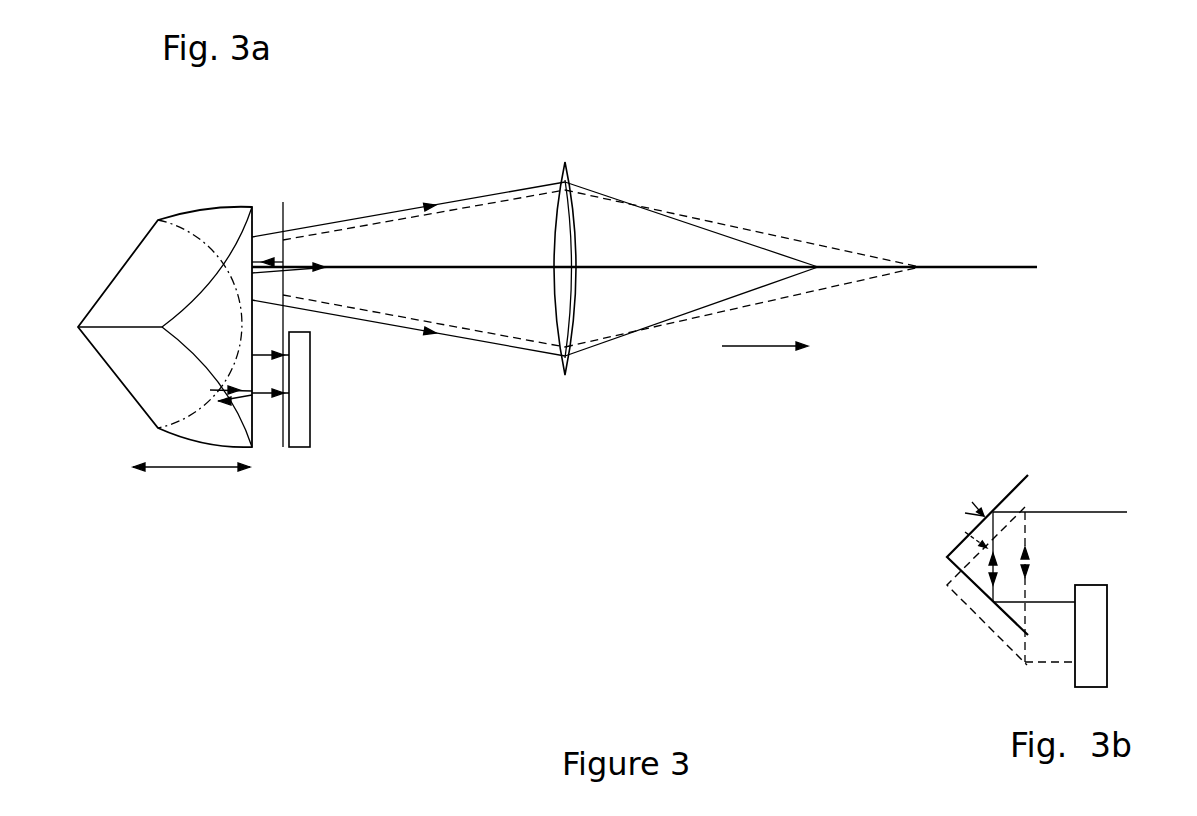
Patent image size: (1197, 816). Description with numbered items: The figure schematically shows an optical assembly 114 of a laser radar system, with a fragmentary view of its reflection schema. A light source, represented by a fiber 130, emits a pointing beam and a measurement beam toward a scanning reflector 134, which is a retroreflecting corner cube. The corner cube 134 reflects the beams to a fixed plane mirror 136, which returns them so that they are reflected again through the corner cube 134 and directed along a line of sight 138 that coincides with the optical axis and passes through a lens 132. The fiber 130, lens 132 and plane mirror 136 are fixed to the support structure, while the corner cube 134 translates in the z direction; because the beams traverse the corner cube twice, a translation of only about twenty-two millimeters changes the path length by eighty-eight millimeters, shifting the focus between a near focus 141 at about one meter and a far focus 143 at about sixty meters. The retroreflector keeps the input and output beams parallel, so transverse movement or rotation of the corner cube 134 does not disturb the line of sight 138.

In FIG. 3A, the optical assembly 114 is at (826, 122).
In FIG. 3A, the fiber 130 is at (345, 268).
In FIG. 3A, the lens 132 is at (566, 160).
In FIG. 3A, the scanning reflector (corner cube) 134 is at (205, 220).
In FIG. 3B, the scanning reflector (corner cube) 134 is at (1005, 497).
In FIG. 3A, the plane mirror 136 is at (290, 428).
In FIG. 3B, the plane mirror 136 is at (1108, 618).
In FIG. 3A, the line of sight 138 is at (672, 265).
In FIG. 3A, the near focus 141 is at (820, 266).
In FIG. 3A, the far focus 143 is at (930, 270).